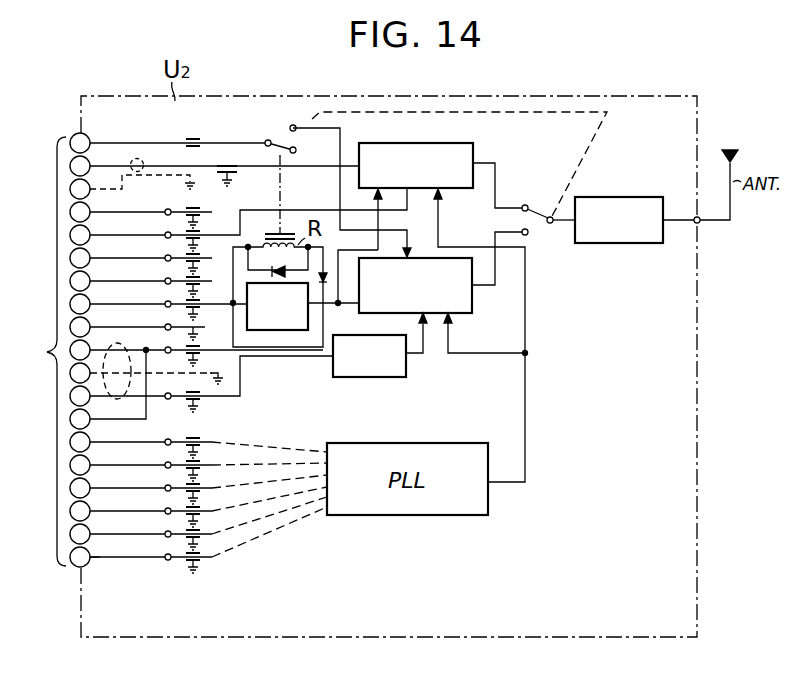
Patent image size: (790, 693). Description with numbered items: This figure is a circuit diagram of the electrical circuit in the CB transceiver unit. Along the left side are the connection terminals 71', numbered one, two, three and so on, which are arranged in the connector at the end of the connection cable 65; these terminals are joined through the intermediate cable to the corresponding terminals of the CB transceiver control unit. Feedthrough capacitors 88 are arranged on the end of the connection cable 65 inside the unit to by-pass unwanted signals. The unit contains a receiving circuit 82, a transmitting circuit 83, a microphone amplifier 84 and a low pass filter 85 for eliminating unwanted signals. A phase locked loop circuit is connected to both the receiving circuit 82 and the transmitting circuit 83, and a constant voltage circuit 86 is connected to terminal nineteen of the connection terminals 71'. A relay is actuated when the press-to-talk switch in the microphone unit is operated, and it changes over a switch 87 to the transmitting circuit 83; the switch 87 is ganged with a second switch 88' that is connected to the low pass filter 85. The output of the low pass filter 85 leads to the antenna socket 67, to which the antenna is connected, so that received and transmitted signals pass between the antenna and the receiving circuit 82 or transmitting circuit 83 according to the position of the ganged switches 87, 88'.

The connection cable 65 is at (130, 561).
The antenna socket 67 is at (699, 223).
The connection terminals 71' is at (52, 350).
The receiving circuit 82 is at (467, 158).
The transmitting circuit 83 is at (467, 297).
The microphone amplifier 84 is at (365, 377).
The low pass filter 85 is at (625, 243).
The constant voltage circuit 86 is at (247, 322).
The switch 87 is at (278, 132).
The feedthrough capacitors 88 is at (217, 334).
The switch 88' is at (548, 244).